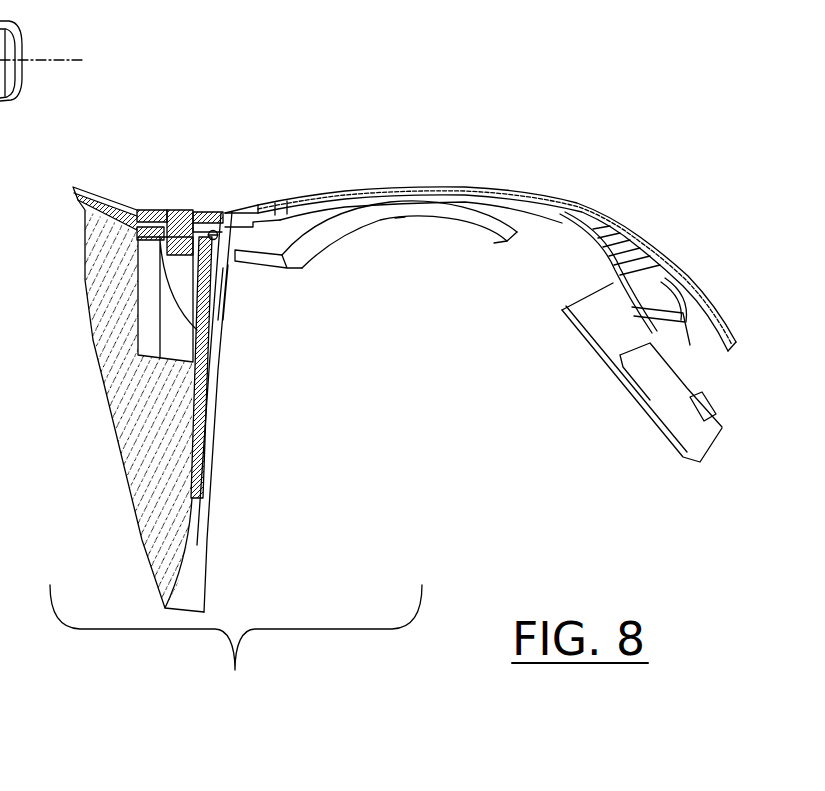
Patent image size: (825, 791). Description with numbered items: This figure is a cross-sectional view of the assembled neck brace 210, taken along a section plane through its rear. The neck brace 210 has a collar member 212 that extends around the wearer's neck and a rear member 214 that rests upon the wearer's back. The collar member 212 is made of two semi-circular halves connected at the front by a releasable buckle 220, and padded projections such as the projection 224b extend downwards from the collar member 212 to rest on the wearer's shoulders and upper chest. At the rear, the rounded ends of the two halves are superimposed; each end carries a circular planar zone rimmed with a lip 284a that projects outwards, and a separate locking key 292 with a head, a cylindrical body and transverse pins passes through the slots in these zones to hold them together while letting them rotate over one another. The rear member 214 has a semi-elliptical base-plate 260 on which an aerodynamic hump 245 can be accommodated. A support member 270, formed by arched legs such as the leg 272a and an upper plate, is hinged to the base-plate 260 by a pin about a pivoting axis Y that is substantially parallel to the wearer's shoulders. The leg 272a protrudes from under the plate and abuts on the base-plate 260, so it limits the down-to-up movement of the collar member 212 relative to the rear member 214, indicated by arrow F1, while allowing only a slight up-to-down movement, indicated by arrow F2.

The neck brace 210 is at (488, 96).
The collar member 212 is at (600, 212).
The rear member 214 is at (236, 644).
The releasable buckle 220 is at (687, 355).
The padded projection 224b is at (452, 212).
The aerodynamic hump 245 is at (152, 472).
The base-plate 260 is at (207, 403).
The support member 270 is at (148, 232).
The arched leg 272a is at (180, 283).
The lip 284a is at (108, 192).
The locking key 292 is at (182, 230).
The down-to-up movement arrow F1 is at (688, 525).
The up-to-down movement arrow F2 is at (665, 500).
The pivoting axis Y is at (41, 48).